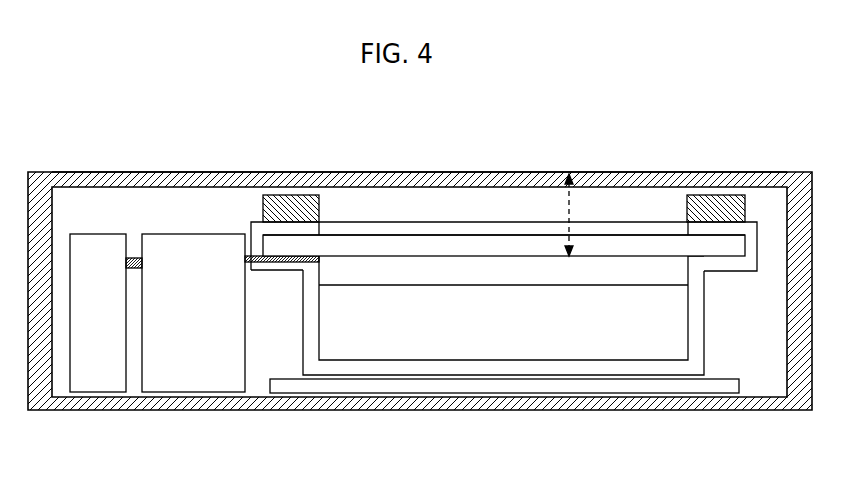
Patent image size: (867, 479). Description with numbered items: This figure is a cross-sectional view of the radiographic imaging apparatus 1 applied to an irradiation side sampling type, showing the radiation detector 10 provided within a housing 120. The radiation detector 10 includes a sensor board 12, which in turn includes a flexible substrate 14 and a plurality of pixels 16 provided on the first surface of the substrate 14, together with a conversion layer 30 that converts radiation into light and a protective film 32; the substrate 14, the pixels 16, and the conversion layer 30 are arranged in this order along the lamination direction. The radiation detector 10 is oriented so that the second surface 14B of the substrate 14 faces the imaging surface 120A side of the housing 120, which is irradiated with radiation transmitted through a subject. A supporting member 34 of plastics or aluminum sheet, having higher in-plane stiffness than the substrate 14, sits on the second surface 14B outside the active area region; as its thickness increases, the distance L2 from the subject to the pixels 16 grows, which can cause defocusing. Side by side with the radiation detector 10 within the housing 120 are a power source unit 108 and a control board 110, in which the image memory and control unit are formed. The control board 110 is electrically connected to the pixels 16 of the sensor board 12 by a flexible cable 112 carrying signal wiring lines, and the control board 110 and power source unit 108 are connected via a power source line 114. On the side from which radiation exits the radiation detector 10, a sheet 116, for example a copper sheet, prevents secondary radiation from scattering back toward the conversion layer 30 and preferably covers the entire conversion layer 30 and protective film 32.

The radiographic imaging apparatus 1 is at (812, 443).
The radiation detector 10 is at (597, 194).
The sensor board 12 is at (770, 287).
The substrate 14 is at (723, 256).
The second surface 14B is at (482, 235).
The pixels 16 is at (693, 278).
The conversion layer 30 is at (683, 325).
The protective film 32 is at (697, 348).
The supporting member 34 is at (293, 205).
The power source unit 108 is at (101, 240).
The control board 110 is at (185, 242).
The flexible cable 112 is at (280, 263).
The power source line 114 is at (137, 254).
The sheet 116 is at (727, 389).
The housing 120 is at (388, 183).
The imaging surface 120A is at (504, 174).
The distance L2 is at (578, 215).